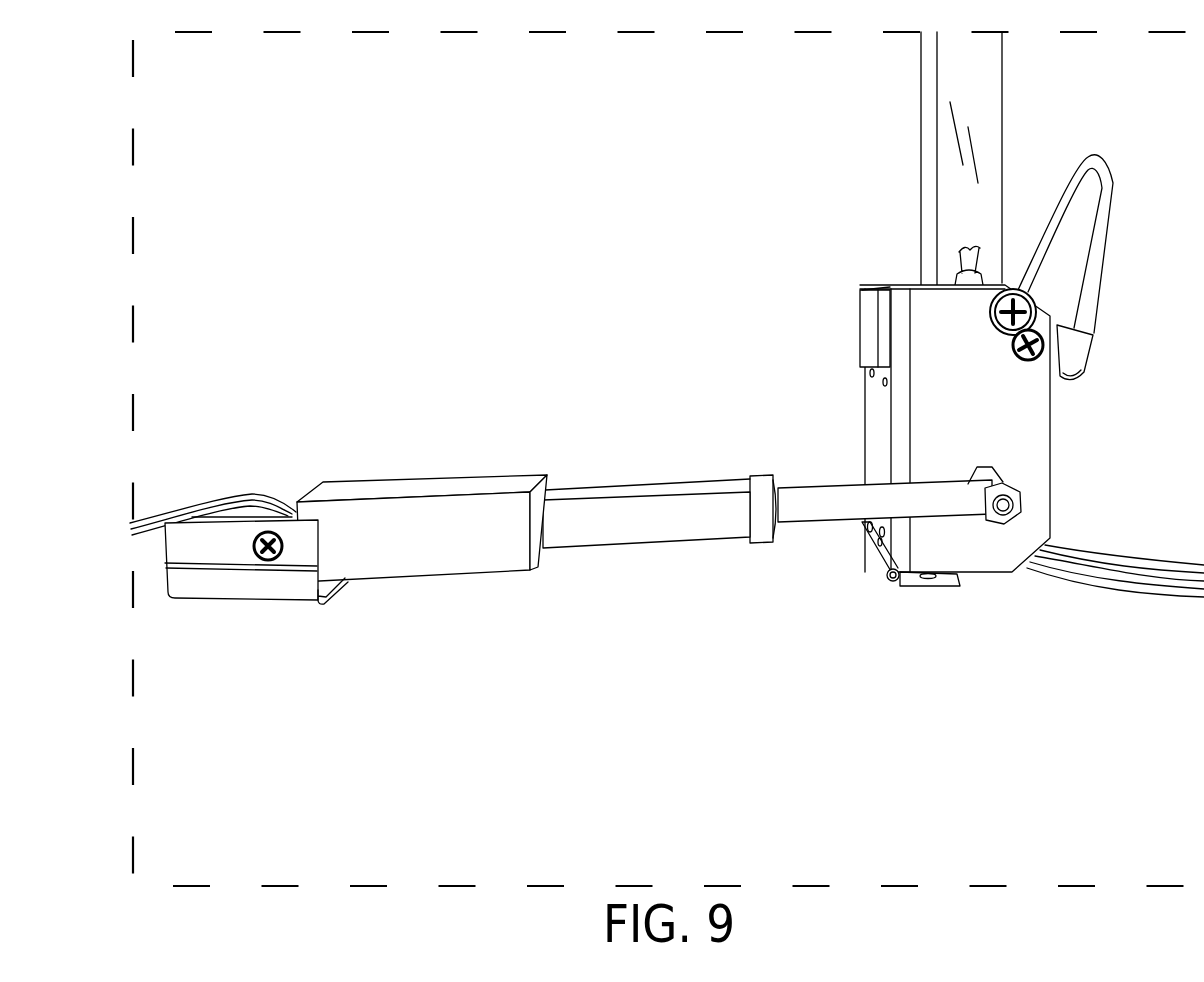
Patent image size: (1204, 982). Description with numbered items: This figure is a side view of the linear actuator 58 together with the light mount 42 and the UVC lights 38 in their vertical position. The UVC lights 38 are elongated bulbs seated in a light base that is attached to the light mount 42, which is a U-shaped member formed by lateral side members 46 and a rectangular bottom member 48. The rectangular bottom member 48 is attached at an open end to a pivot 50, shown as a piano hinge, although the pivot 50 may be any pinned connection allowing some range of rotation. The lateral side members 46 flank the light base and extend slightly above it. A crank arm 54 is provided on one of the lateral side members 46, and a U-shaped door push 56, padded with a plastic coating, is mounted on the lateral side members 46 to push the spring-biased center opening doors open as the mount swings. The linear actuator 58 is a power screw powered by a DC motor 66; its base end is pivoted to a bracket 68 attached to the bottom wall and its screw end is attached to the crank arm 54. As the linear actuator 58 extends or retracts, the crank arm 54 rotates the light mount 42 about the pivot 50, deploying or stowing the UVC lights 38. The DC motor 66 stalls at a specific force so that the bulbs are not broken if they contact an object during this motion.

The UVC light 38 is at (921, 133).
The light mount 42 is at (853, 368).
The lateral side member 46 is at (1033, 442).
The rectangular bottom member 48 is at (873, 425).
The pivot 50 is at (897, 583).
The crank arm 54 is at (1013, 507).
The door push 56 is at (1113, 183).
The linear actuator 58 is at (645, 543).
The DC motor 66 is at (450, 480).
The bracket 68 is at (278, 590).